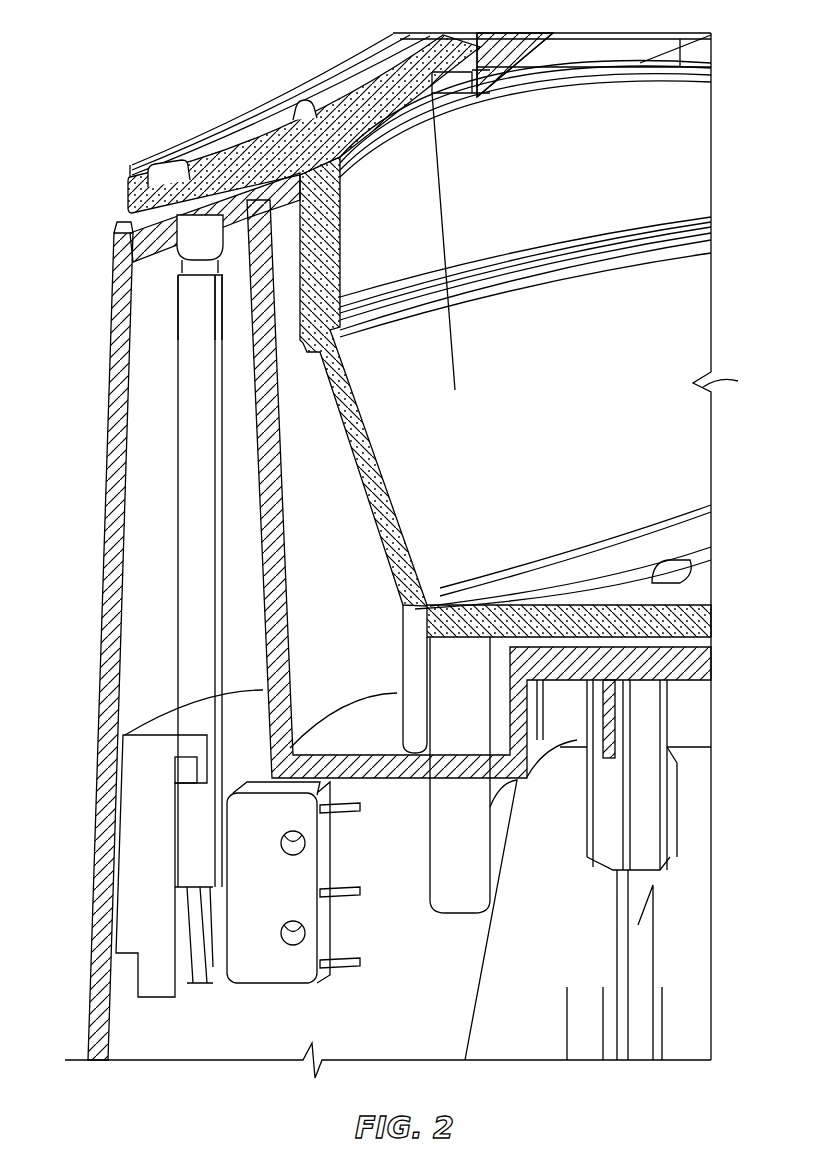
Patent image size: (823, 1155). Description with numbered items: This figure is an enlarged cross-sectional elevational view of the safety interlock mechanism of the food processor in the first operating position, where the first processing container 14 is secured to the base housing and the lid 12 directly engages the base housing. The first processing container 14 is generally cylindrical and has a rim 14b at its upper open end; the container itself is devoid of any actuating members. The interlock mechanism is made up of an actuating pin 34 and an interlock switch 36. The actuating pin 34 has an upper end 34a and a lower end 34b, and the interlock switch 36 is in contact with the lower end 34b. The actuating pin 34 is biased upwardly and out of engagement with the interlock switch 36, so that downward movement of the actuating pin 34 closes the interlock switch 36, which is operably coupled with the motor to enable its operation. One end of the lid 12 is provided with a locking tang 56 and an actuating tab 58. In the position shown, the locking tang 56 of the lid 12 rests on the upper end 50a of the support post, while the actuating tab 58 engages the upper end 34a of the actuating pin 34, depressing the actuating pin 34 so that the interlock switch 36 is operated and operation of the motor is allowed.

The lid 12 is at (207, 163).
The locking tang 56 is at (157, 167).
The rim 14b is at (142, 238).
The upper end of the support post 50a is at (187, 247).
The actuating tab 58 is at (187, 283).
The upper end of the actuating pin 34a is at (187, 313).
The actuating pin 34 is at (190, 418).
The first processing container 14 is at (677, 315).
The interlock switch 36 is at (245, 838).
The lower end of the actuating pin 34b is at (188, 853).